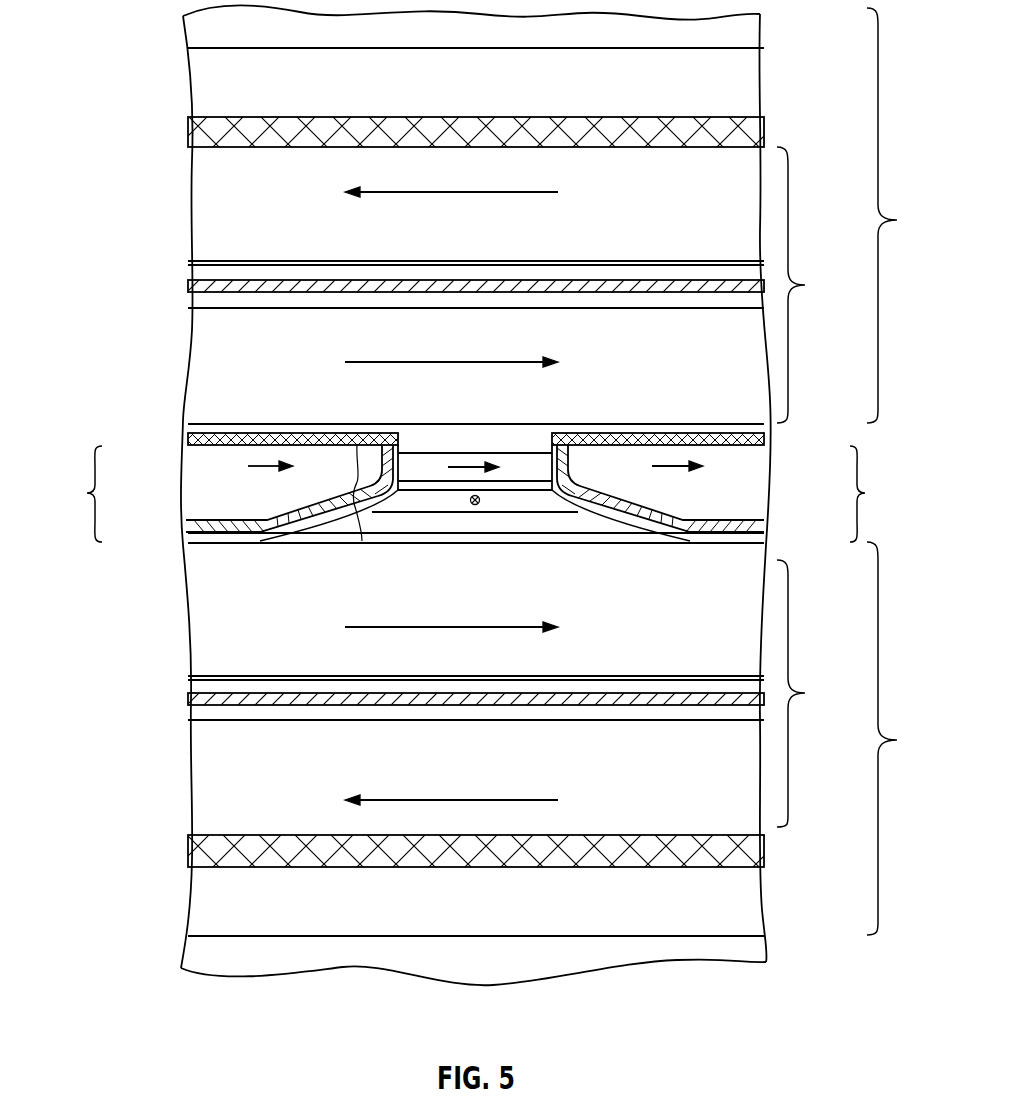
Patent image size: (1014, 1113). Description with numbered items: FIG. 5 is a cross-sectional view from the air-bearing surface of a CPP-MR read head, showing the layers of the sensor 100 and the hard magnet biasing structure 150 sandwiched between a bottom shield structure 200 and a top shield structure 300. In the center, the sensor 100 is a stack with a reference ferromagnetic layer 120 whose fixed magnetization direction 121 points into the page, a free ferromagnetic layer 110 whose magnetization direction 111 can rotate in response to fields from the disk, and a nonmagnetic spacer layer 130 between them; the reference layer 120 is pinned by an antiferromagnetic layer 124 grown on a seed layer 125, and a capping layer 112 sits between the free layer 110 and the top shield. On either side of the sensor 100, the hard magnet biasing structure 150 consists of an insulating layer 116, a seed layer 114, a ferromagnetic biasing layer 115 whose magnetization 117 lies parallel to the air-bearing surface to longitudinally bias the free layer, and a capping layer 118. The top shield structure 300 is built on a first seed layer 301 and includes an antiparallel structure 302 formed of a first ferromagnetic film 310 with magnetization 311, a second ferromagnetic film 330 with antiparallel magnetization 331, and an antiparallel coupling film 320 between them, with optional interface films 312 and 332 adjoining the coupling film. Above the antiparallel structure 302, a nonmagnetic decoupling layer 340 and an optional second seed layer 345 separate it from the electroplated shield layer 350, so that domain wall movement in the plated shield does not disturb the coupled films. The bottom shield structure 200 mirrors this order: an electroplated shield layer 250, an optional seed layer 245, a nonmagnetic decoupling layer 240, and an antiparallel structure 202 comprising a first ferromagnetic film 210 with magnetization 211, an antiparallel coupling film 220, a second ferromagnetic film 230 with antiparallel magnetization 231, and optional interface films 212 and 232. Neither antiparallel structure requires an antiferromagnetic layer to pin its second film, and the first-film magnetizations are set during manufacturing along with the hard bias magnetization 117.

The CPP-MR sensor 100 is at (435, 445).
The free ferromagnetic layer 110 is at (475, 430).
The magnetization direction of free layer 111 is at (477, 463).
The capping layer 112 is at (540, 437).
The seed layer 114 is at (183, 527).
The ferromagnetic biasing layer 115 is at (475, 475).
The insulating layer 116 is at (187, 535).
The magnetization of biasing layer 117 is at (268, 470).
The capping layer 118 is at (275, 436).
The reference ferromagnetic layer 120 is at (475, 544).
The magnetization direction of reference layer 121 is at (475, 505).
The antiferromagnetic layer 124 is at (580, 522).
The seed layer 125 is at (632, 538).
The nonmagnetic spacer layer 130 is at (422, 487).
The hard magnet biasing structure 150 is at (475, 494).
The bottom shield structure S1 200 is at (907, 738).
The antiparallel structure of bottom shield 202 is at (814, 693).
The first ferromagnetic film 210 is at (336, 612).
The magnetization of first ferromagnetic film 211 is at (455, 623).
The first ferromagnetic interface film 212 is at (197, 678).
The antiparallel coupling film 220 is at (197, 694).
The second ferromagnetic film 230 is at (336, 794).
The magnetization of second ferromagnetic film 231 is at (460, 796).
The second ferromagnetic interface film 232 is at (196, 716).
The nonmagnetic decoupling layer 240 is at (197, 847).
The seed layer 245 is at (198, 892).
The electroplated shield layer 250 is at (198, 947).
The top shield structure S2 300 is at (907, 215).
The first seed layer 301 is at (183, 428).
The antiparallel structure of top shield 302 is at (814, 285).
The first ferromagnetic film 310 is at (329, 363).
The magnetization of first ferromagnetic film 311 is at (455, 358).
The first ferromagnetic interface film 312 is at (200, 300).
The antiparallel coupling film 320 is at (197, 286).
The second ferromagnetic film 330 is at (336, 171).
The magnetization of second ferromagnetic film 331 is at (460, 188).
The second ferromagnetic interface film 332 is at (197, 262).
The nonmagnetic decoupling layer 340 is at (200, 138).
The second seed layer 345 is at (197, 76).
The electroplated shield layer 350 is at (197, 32).